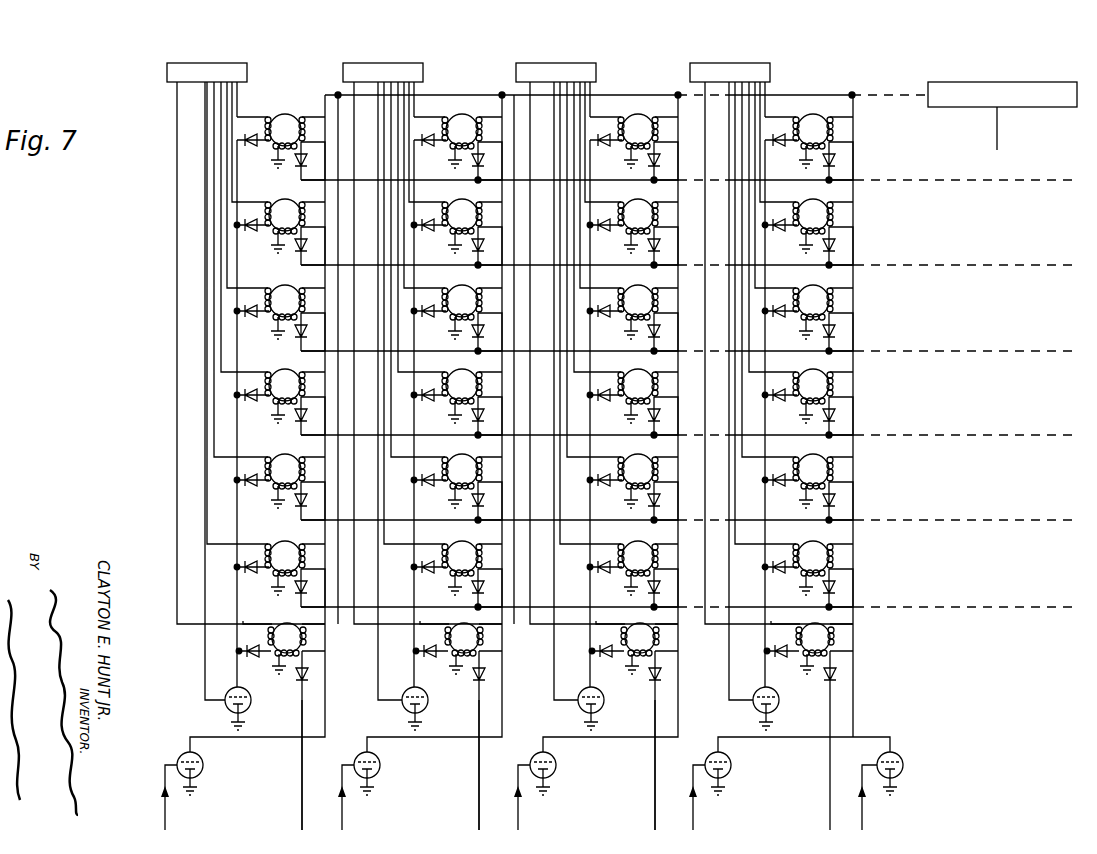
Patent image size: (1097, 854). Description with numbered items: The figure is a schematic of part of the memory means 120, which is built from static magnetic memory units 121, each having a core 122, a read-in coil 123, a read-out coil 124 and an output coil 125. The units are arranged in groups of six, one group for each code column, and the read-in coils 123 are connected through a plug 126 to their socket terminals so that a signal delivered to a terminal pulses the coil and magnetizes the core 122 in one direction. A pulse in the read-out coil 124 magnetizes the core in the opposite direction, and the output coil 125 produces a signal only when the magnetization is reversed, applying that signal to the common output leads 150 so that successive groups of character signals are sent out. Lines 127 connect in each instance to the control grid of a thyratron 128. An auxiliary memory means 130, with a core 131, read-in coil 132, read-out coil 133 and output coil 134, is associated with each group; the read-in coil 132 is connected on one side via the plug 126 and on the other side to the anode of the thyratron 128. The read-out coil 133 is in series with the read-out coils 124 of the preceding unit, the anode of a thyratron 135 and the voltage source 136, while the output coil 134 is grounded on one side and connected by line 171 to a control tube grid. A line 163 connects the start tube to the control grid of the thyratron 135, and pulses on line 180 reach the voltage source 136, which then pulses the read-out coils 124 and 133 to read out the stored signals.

The memory means 120 is at (174, 338).
The static magnetic memory unit 121 is at (278, 113).
The core 122 is at (274, 116).
The read-in coil 123 is at (282, 150).
The read-out coil 124 is at (306, 306).
The output coil 125 is at (302, 232).
The plug 126 is at (167, 74).
The line 127 is at (205, 592).
The thyratron 128 is at (251, 700).
The auxiliary memory means 130 is at (309, 641).
The core 131 is at (294, 626).
The read-in coil 132 is at (272, 632).
The read-out coil 133 is at (304, 651).
The output coil 134 is at (278, 658).
The thyratron 135 is at (198, 753).
The voltage source 136 is at (975, 108).
The common output lead 150 is at (858, 180).
The line 163 is at (173, 764).
The line 171 is at (302, 782).
The line 180 is at (998, 122).